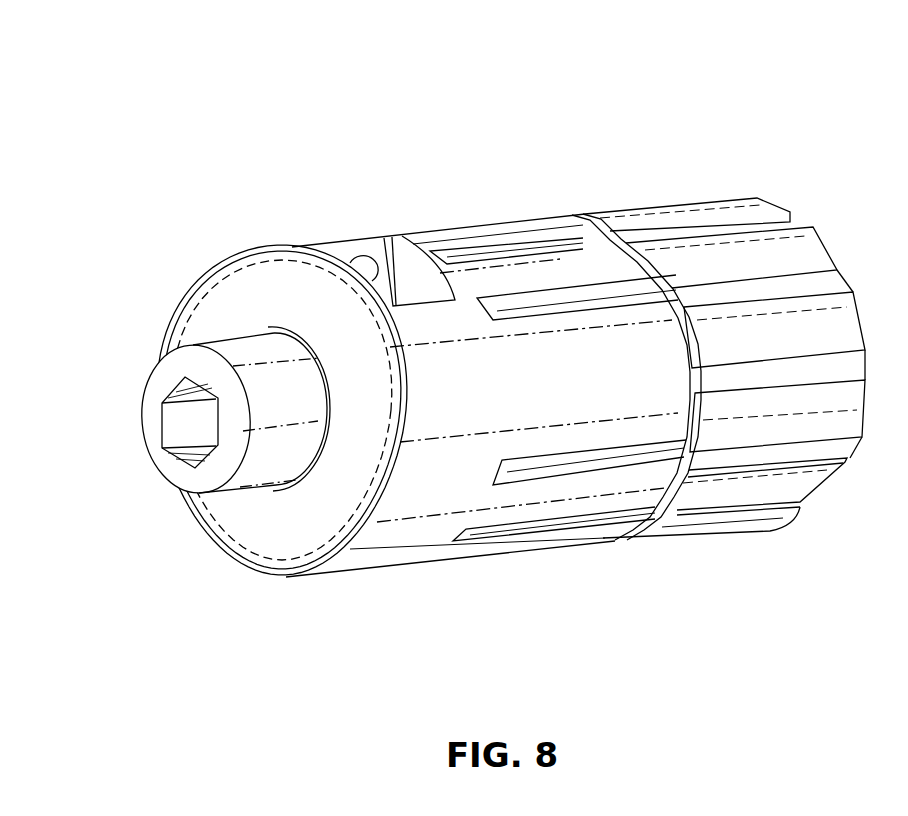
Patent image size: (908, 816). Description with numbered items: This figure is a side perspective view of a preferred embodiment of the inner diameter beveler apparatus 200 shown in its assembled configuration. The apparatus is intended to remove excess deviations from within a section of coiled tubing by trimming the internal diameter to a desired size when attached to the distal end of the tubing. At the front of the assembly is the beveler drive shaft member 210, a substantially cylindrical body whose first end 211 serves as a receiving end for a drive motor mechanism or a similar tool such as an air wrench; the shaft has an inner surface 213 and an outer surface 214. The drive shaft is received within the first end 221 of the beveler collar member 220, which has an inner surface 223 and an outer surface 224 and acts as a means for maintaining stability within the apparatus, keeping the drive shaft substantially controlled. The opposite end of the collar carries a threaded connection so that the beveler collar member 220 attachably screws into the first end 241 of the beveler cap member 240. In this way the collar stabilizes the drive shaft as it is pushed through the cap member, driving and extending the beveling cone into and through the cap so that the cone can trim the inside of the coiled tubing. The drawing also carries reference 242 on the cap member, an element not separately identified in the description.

The inner diameter beveler apparatus 200 is at (612, 130).
The beveler drive shaft member 210 is at (268, 410).
The first end 211 is at (183, 475).
The inner surface 213 is at (187, 423).
The outer surface 214 is at (237, 343).
The beveler collar member 220 is at (418, 403).
The first end 221 is at (278, 543).
The inner surface 223 is at (281, 354).
The outer surface 224 is at (434, 519).
The beveler cap member 240 is at (786, 348).
The first end 241 is at (655, 512).
The end edge of faceted section 242 is at (866, 422).